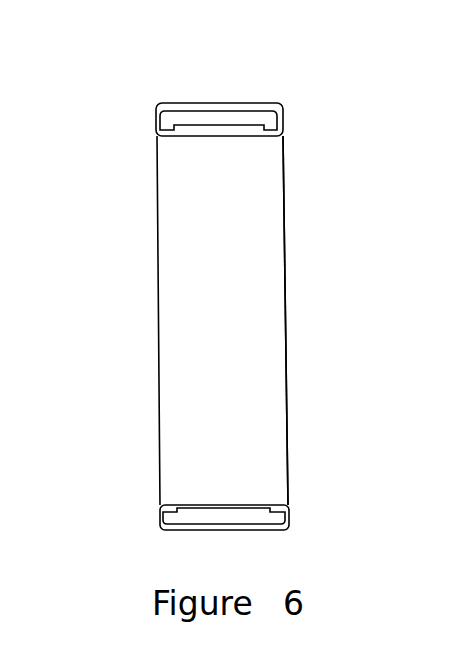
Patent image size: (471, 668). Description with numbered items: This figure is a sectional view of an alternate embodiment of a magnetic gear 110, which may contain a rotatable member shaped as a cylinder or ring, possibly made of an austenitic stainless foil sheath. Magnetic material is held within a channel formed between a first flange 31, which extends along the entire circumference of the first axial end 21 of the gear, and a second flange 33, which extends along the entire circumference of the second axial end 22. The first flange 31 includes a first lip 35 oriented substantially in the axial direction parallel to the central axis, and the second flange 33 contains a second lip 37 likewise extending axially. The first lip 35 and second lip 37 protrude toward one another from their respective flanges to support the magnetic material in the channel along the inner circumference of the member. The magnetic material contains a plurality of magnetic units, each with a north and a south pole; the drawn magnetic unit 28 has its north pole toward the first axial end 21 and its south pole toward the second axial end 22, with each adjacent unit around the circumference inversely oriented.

The first axial end 21 is at (157, 244).
The second axial end 22 is at (286, 325).
The magnetic gear 110 is at (290, 218).
The first flange 31 is at (156, 122).
The magnetic unit 28 is at (223, 118).
The second flange 33 is at (284, 112).
The second lip 37 is at (287, 137).
The first lip 35 is at (156, 137).